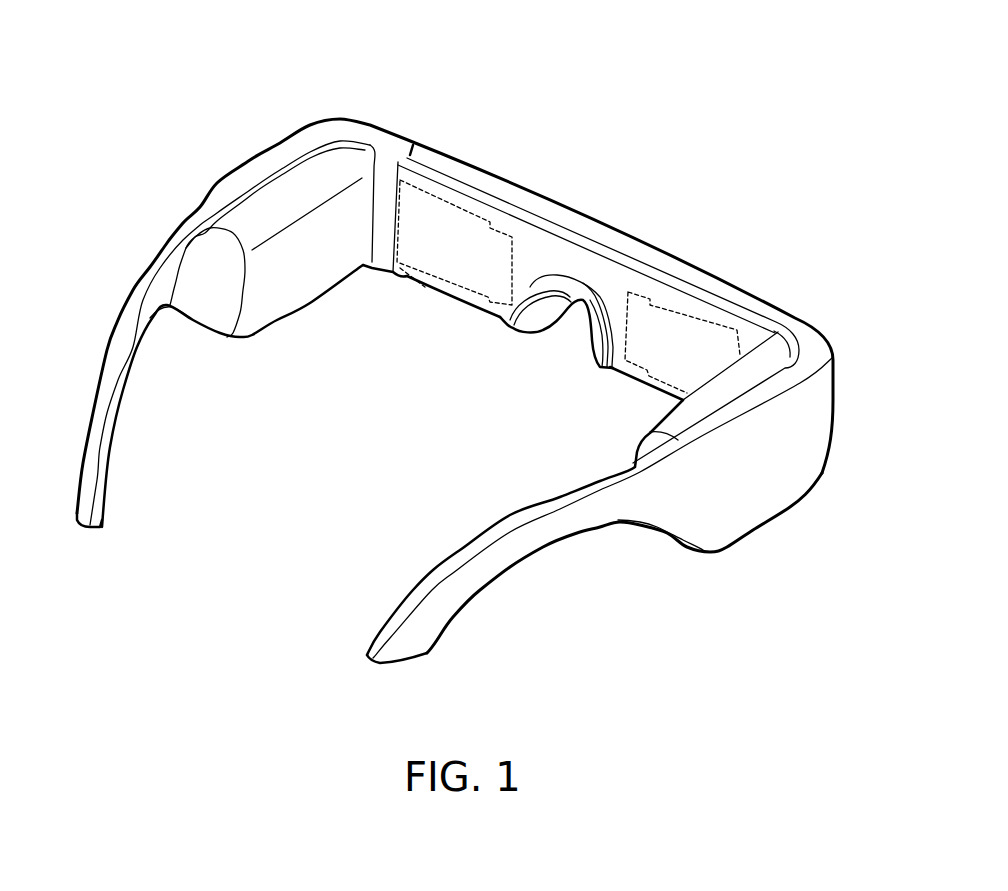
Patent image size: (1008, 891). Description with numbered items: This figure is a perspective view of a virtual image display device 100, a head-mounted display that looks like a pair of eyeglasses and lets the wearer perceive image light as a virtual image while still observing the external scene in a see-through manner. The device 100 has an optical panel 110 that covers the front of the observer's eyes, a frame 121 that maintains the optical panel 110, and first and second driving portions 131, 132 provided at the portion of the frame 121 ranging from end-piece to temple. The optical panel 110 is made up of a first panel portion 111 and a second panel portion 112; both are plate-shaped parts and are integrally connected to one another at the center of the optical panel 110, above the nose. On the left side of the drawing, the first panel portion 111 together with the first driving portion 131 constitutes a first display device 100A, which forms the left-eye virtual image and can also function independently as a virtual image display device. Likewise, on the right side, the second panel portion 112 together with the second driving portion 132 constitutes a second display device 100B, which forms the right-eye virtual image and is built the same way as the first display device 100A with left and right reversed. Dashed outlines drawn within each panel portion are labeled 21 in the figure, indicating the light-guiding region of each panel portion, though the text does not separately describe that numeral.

The virtual image display device 100 is at (855, 58).
The first display device 100A is at (438, 126).
The second display device 100B is at (768, 265).
The optical panel 110 is at (590, 275).
The first panel portion 111 is at (413, 280).
The second panel portion 112 is at (647, 383).
The frame 121 is at (390, 147).
The first driving portion 131 is at (265, 207).
The second driving portion 132 is at (750, 373).
The light guide plate 21 is at (470, 226).